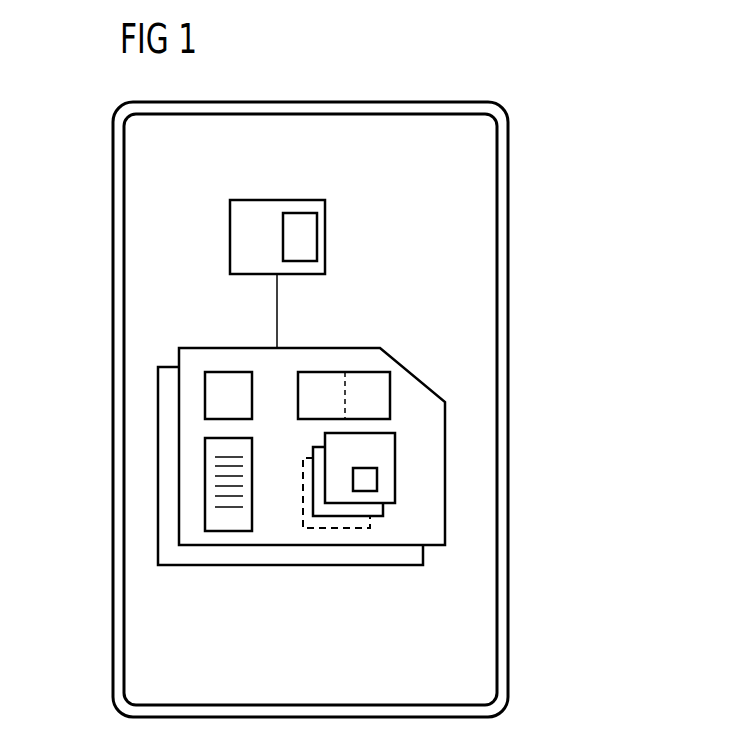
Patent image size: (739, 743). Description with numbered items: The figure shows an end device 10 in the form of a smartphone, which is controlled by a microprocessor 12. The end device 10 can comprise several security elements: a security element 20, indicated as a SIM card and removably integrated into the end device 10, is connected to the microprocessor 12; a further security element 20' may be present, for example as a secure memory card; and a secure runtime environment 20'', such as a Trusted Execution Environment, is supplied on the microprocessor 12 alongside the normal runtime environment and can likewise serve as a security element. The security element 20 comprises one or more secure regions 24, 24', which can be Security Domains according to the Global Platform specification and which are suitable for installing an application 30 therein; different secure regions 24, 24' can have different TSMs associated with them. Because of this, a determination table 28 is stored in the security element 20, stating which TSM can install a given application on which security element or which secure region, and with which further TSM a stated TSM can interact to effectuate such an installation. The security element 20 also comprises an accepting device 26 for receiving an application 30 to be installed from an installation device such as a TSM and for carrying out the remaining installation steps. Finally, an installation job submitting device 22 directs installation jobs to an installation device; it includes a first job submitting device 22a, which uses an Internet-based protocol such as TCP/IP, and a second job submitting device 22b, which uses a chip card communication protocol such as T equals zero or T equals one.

The end device 10 is at (413, 102).
The microprocessor 12 is at (277, 200).
The security element 20 is at (299, 388).
The security element 20' is at (290, 530).
The secure runtime environment 20'' is at (388, 247).
The installation job submitting device 22 is at (390, 390).
The first job submitting device 22a is at (322, 372).
The second job submitting device 22b is at (362, 372).
The secure region 24 is at (461, 461).
The secure region 24' is at (450, 500).
The accepting device 26 is at (226, 372).
The determination table 28 is at (228, 531).
The application 30 is at (377, 480).